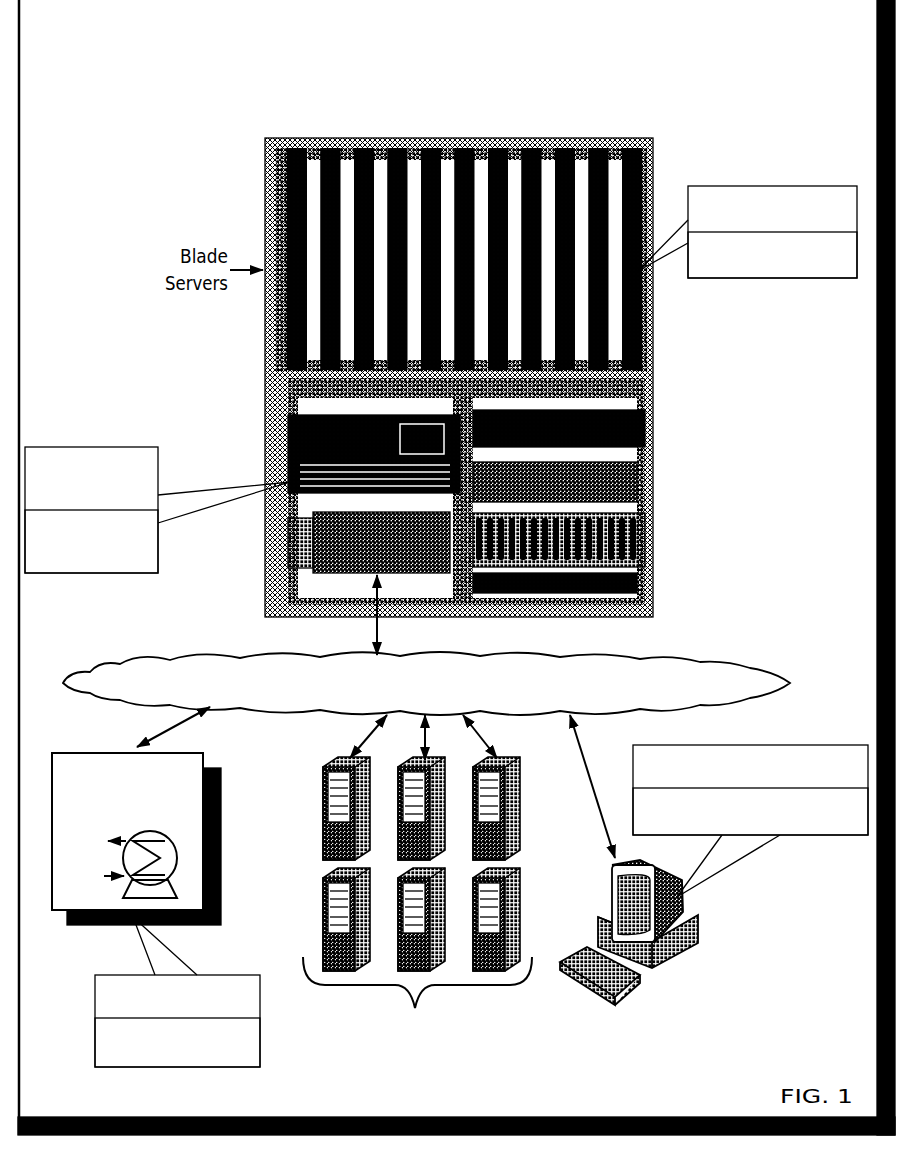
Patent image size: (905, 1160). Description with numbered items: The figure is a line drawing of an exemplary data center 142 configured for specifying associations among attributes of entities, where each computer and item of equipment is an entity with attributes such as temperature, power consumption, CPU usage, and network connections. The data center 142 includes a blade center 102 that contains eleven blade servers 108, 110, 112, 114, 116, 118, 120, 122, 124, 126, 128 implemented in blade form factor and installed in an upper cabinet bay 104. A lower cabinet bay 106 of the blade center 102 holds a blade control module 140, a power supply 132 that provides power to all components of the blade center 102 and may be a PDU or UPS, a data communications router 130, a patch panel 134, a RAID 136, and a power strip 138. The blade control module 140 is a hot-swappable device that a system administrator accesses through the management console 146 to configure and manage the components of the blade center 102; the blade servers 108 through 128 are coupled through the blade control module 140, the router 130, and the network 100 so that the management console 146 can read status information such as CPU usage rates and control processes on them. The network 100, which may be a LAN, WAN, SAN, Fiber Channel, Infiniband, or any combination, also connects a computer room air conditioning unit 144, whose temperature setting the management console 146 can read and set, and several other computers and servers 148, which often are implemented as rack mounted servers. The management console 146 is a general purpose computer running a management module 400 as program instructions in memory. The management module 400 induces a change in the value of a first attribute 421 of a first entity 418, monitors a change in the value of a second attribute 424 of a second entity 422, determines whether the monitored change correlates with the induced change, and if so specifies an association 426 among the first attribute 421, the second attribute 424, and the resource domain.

The data center 142 is at (166, 16).
The blade center 102 is at (263, 137).
The cabinet bay 104 is at (265, 180).
The cabinet bay 106 is at (265, 403).
The blade server 108 is at (297, 147).
The blade server 110 is at (330, 147).
The blade server 112 is at (364, 147).
The blade server 114 is at (398, 147).
The blade server 116 is at (431, 147).
The blade server 118 is at (464, 147).
The blade server 120 is at (498, 147).
The blade server 122 is at (532, 147).
The blade server 124 is at (565, 147).
The blade server 126 is at (598, 147).
The blade server 128 is at (632, 147).
The router 130 is at (263, 553).
The power supply 132 is at (263, 441).
The patch panel 134 is at (657, 489).
The RAID 136 is at (657, 548).
The power strip 138 is at (657, 591).
The blade control module 140 is at (657, 434).
The computer room air conditioning unit 144 is at (85, 833).
The management console 146 is at (733, 996).
The other computers and servers 148 is at (452, 1088).
The network 100 is at (481, 693).
The first entity 418 is at (212, 1011).
The first attribute 421 is at (218, 1051).
The second entity 422 is at (106, 498).
The second attribute 424 is at (144, 566).
The management module 400 is at (855, 780).
The association 426 is at (859, 820).